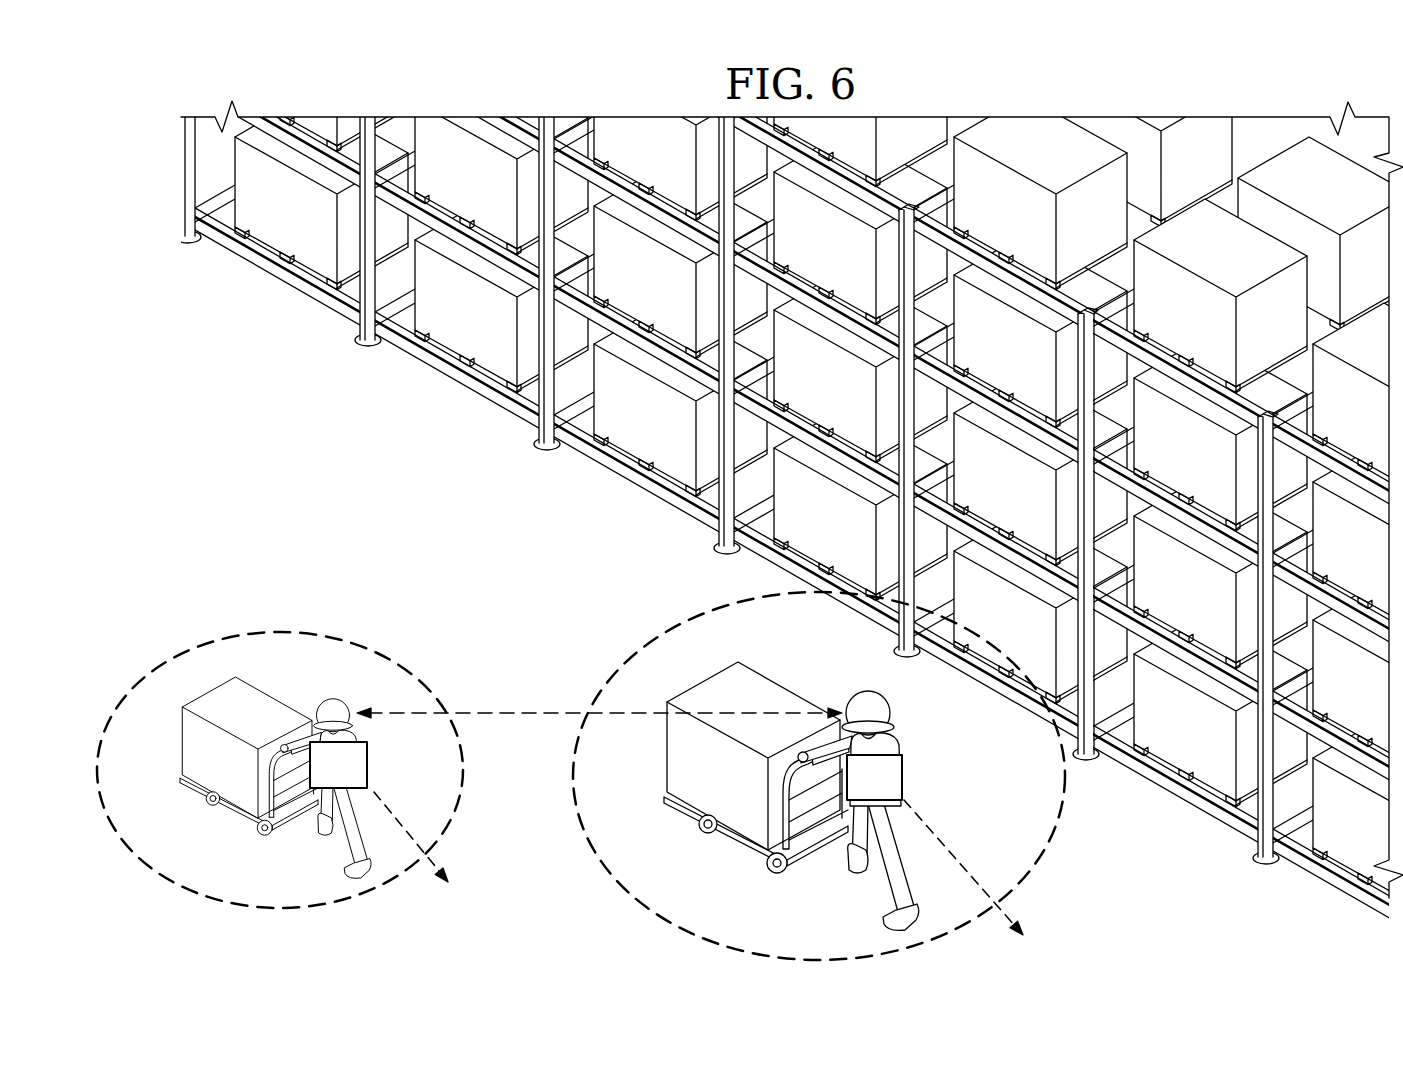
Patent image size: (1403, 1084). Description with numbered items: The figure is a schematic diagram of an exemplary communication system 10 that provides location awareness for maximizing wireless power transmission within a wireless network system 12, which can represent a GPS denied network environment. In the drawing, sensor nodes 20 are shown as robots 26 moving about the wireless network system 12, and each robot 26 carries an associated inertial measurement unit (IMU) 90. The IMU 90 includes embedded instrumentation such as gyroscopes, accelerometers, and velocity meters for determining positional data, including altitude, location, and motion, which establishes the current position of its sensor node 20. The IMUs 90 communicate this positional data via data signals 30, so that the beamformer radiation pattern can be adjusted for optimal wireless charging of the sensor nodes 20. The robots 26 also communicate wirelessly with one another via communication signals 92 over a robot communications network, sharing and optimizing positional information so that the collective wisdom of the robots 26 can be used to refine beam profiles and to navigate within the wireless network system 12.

The communication system 10 is at (152, 88).
The wireless network system 12 is at (180, 165).
The sensor nodes 20 is at (627, 784).
The robots 26 is at (331, 696).
The data signals 30 is at (447, 884).
The inertial measurement unit 90 is at (368, 770).
The communication signals 92 is at (500, 712).